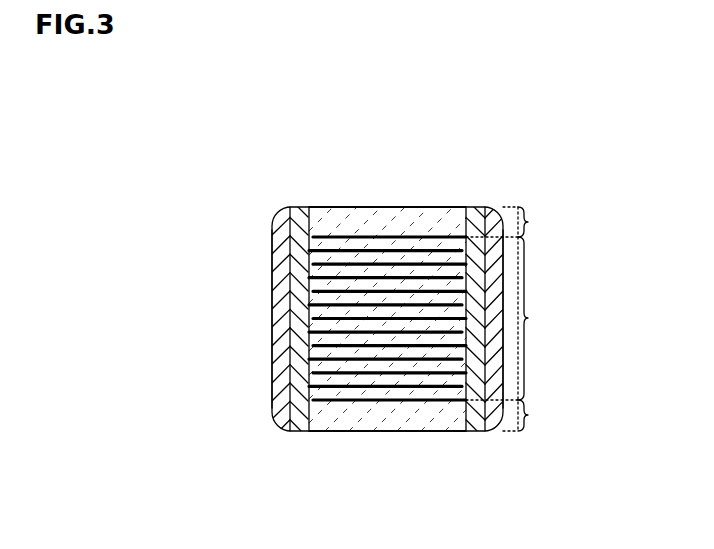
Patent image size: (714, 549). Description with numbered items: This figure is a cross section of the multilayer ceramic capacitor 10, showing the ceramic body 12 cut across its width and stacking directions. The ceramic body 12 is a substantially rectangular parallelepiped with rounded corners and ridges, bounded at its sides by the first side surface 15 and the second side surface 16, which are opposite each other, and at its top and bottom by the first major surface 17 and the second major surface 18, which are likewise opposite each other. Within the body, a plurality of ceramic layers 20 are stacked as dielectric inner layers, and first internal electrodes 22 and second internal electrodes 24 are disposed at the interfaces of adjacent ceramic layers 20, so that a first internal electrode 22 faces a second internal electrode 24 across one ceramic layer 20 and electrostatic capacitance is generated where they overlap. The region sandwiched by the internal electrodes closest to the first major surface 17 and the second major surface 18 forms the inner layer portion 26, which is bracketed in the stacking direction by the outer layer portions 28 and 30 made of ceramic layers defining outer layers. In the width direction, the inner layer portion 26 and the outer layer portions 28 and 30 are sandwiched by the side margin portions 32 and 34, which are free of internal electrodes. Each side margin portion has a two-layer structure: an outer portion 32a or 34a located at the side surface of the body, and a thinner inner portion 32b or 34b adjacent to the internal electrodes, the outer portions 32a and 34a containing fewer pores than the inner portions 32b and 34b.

The multilayer ceramic capacitor 10 is at (287, 166).
The ceramic body 12 is at (331, 206).
The first side surface 15 is at (503, 365).
The second side surface 16 is at (272, 362).
The first major surface 17 is at (433, 207).
The second major surface 18 is at (383, 432).
The ceramic layer 20 is at (457, 360).
The first internal electrode 22 is at (428, 285).
The second internal electrode 24 is at (372, 360).
The inner layer portion 26 is at (539, 318).
The outer layer portion 28 is at (511, 319).
The outer layer portion 30 is at (511, 415).
The side margin portion 32 is at (221, 305).
The outer portion 32a is at (283, 228).
The inner portion 32b is at (293, 208).
The side margin portion 34 is at (564, 279).
The outer portion 34a is at (490, 212).
The inner portion 34b is at (475, 207).